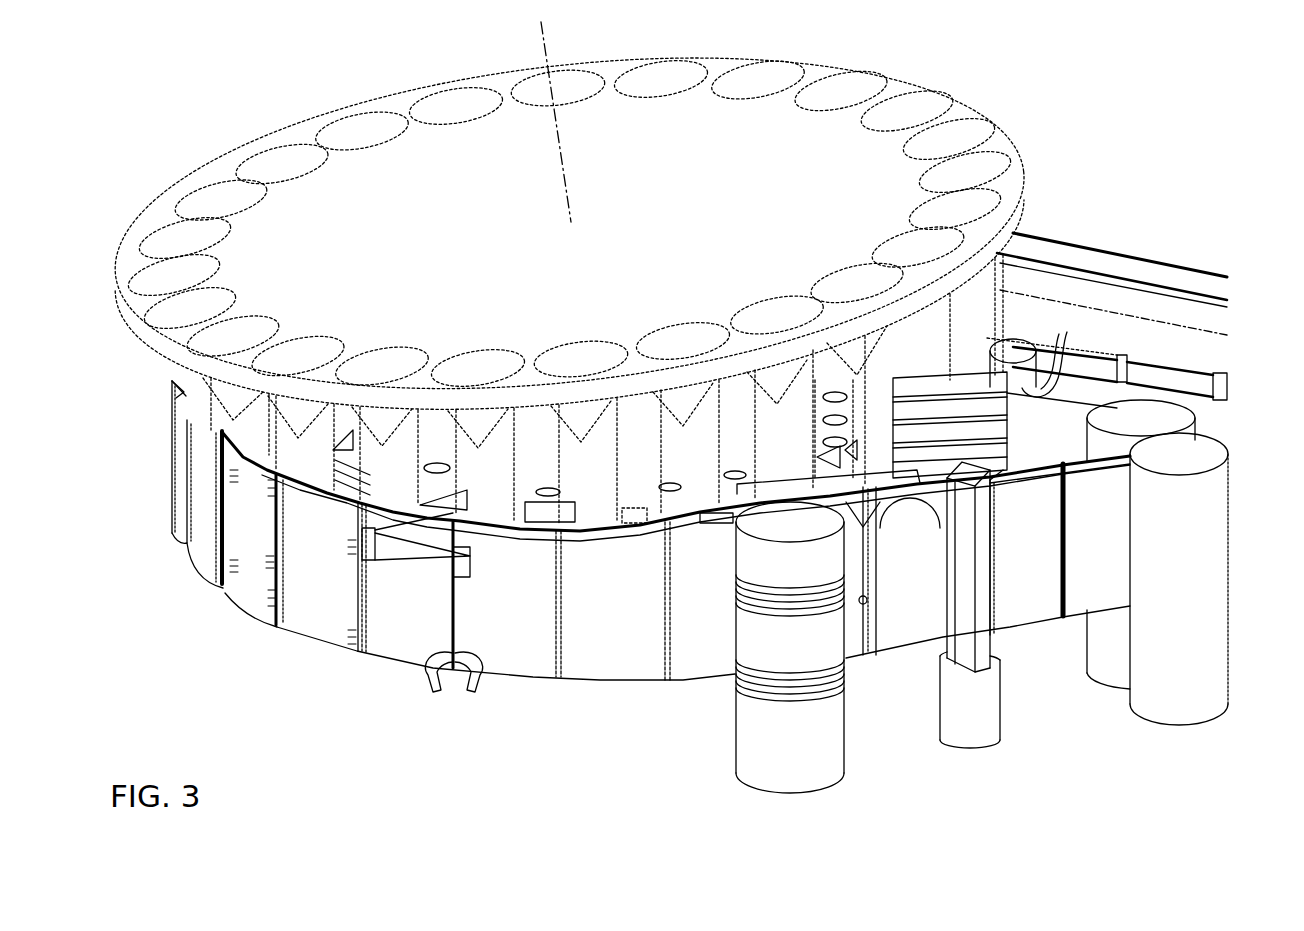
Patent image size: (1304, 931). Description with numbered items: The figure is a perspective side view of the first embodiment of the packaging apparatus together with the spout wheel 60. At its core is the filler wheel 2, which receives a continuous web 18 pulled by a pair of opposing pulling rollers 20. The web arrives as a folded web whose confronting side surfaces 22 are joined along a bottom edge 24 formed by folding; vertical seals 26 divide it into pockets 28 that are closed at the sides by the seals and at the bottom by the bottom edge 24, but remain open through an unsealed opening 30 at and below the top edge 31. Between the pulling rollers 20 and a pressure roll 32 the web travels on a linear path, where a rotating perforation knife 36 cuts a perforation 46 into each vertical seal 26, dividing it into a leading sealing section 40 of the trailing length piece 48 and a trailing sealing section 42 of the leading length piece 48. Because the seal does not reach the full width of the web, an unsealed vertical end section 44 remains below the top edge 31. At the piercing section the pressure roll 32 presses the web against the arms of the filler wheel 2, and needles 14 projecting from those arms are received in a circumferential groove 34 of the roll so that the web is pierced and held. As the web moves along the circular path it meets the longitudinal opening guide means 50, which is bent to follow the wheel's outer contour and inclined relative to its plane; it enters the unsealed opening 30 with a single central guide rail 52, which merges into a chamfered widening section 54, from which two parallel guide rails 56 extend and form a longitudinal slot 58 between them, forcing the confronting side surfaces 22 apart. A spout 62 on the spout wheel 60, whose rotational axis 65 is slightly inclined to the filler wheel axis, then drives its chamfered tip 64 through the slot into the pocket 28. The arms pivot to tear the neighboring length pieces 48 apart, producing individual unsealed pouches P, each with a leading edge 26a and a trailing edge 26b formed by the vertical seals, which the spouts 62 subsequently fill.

The filler wheel 2 is at (648, 430).
The needles 14 is at (434, 676).
The continuous web 18 is at (1115, 547).
The pulling rollers 20 is at (1154, 427).
The confronting side surfaces 22 is at (308, 494).
The bottom edge 24 is at (1010, 632).
The vertical seals 26 is at (868, 662).
The leading edge 26a is at (878, 562).
The support profile 26b is at (868, 600).
The pockets 28 is at (643, 518).
The unsealed opening 30 is at (330, 488).
The top edge 31 is at (700, 532).
The pressure roll 32 is at (728, 708).
The circumferential groove 34 is at (795, 596).
The rotating perforation knife 36 is at (934, 660).
The leading sealing section 40 is at (285, 630).
The trailing sealing section 42 is at (272, 630).
The unsealed vertical end section 44 is at (645, 536).
The perforation 46 is at (878, 514).
The length pieces 48 is at (560, 722).
The longitudinal opening guide means 50 is at (862, 460).
The central guide rail 52 is at (815, 465).
The chamfered widening section 54 is at (605, 516).
The parallel guide rails 56 is at (408, 538).
The longitudinal slot 58 is at (429, 505).
The spout wheel 60 is at (697, 217).
The spouts 62 is at (243, 430).
The tip 64 is at (705, 502).
The rotational axis 65 is at (559, 136).
The pouches P is at (211, 515).